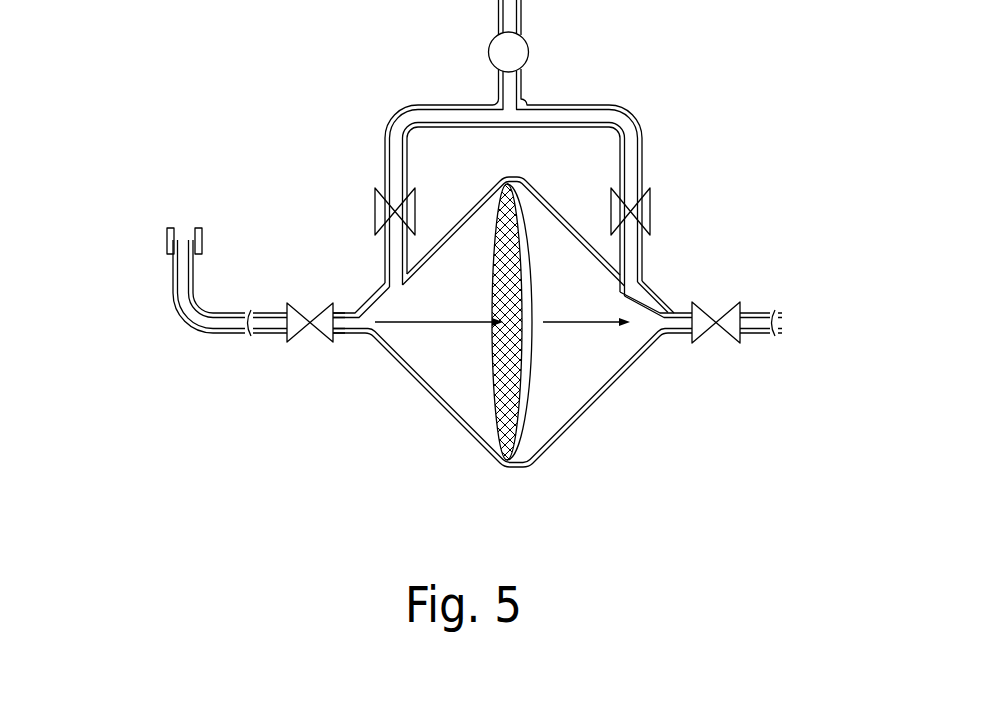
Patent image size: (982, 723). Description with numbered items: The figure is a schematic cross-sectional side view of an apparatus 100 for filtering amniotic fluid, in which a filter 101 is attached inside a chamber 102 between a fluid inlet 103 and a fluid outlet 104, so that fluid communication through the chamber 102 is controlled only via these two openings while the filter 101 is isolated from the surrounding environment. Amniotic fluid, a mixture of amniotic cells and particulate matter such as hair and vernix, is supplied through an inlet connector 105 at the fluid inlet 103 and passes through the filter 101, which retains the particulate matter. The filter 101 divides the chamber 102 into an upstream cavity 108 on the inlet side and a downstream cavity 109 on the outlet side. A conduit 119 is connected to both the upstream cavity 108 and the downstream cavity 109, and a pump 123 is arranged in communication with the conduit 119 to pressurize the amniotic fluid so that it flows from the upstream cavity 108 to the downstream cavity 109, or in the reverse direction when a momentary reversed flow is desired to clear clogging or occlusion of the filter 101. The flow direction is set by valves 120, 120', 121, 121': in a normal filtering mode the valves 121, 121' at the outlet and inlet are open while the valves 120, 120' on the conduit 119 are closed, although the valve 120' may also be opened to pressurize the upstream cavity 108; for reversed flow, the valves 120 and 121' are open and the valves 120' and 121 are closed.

The apparatus 100 is at (156, 124).
The filter 101 is at (507, 420).
The chamber 102 is at (473, 443).
The fluid inlet 103 is at (350, 322).
The fluid outlet 104 is at (670, 323).
The inlet connector 105 is at (178, 351).
The upstream cavity 108 is at (445, 380).
The downstream cavity 109 is at (579, 383).
The conduit 119 is at (578, 113).
The valve 120 is at (677, 197).
The valve 120' is at (346, 197).
The valve 121 is at (754, 356).
The valve 121' is at (281, 357).
The pump 123 is at (490, 41).